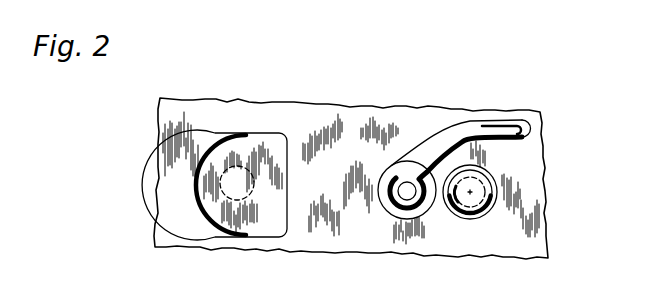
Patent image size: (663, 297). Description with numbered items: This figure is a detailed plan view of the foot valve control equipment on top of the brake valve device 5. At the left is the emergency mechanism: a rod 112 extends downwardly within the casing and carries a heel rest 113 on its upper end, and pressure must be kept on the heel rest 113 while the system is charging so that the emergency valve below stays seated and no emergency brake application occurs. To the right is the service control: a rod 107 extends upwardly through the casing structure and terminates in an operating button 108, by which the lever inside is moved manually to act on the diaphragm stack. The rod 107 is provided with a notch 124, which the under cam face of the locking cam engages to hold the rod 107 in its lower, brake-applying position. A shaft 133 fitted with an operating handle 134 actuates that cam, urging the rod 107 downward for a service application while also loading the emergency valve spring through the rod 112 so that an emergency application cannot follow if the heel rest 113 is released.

The brake valve device 5 is at (275, 98).
The operating handle 134 is at (545, 138).
The heel rest 113 is at (233, 134).
The rod 112 is at (252, 186).
The shaft 133 is at (407, 192).
The operating button 108 is at (482, 168).
The rod 107 is at (479, 191).
The notch 124 is at (452, 213).